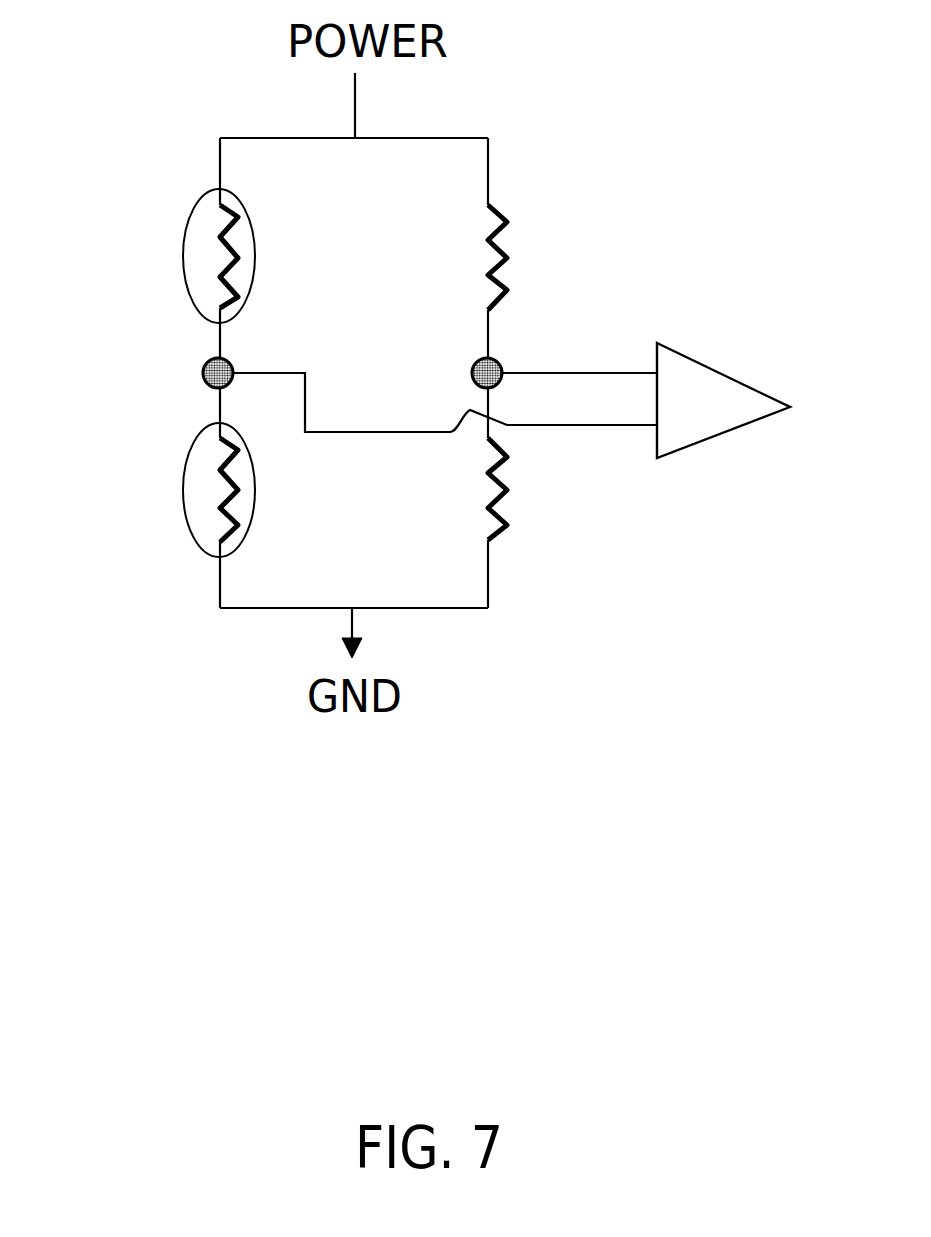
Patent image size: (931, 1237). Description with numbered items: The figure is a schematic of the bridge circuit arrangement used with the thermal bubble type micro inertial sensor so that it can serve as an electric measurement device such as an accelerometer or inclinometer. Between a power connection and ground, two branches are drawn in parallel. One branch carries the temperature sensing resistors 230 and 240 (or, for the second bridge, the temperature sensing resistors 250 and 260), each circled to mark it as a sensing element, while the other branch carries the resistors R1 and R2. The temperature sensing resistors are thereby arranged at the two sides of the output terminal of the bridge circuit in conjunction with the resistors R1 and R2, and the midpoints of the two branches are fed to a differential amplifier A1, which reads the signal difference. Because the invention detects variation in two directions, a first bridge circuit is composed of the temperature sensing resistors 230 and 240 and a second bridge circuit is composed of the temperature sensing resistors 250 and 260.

The temperature sensing resistor 230 is at (162, 256).
The temperature sensing resistor 250 is at (162, 256).
The temperature sensing resistor 240 is at (162, 490).
The temperature sensing resistor 260 is at (162, 490).
The resistor R1 is at (529, 257).
The resistor R2 is at (532, 489).
The differential amplifier A1 is at (690, 358).